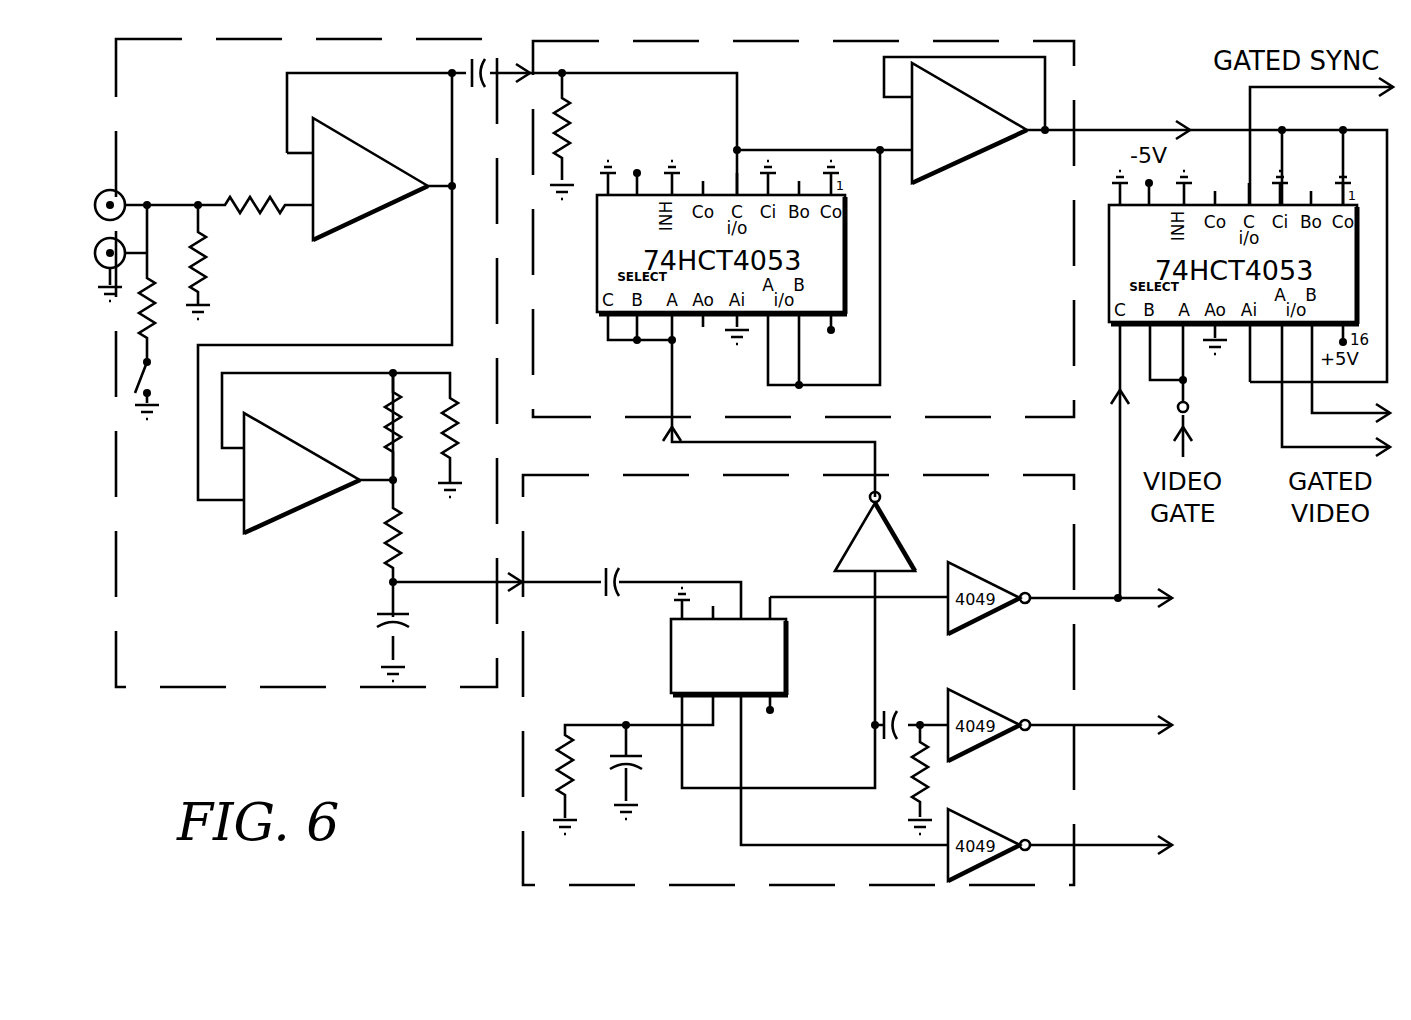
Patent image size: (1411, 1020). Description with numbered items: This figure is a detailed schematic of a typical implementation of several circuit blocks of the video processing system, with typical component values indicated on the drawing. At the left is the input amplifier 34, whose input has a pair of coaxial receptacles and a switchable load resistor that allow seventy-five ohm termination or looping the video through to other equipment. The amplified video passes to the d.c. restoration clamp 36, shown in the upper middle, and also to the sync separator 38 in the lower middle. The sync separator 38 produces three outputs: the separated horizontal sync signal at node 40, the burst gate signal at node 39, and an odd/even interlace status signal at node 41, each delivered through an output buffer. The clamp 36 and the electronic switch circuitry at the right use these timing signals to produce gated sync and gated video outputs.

The input amplifier 34 is at (267, 687).
The d.c. restoration clamp 36 is at (1074, 75).
The sync separator 38 is at (522, 775).
The node carrying the burst gate signal 39 is at (1110, 727).
The node carrying the separated horizontal sync signal 40 is at (1127, 598).
The node carrying the O/E (odd/even) interlace status signal 41 is at (1110, 845).